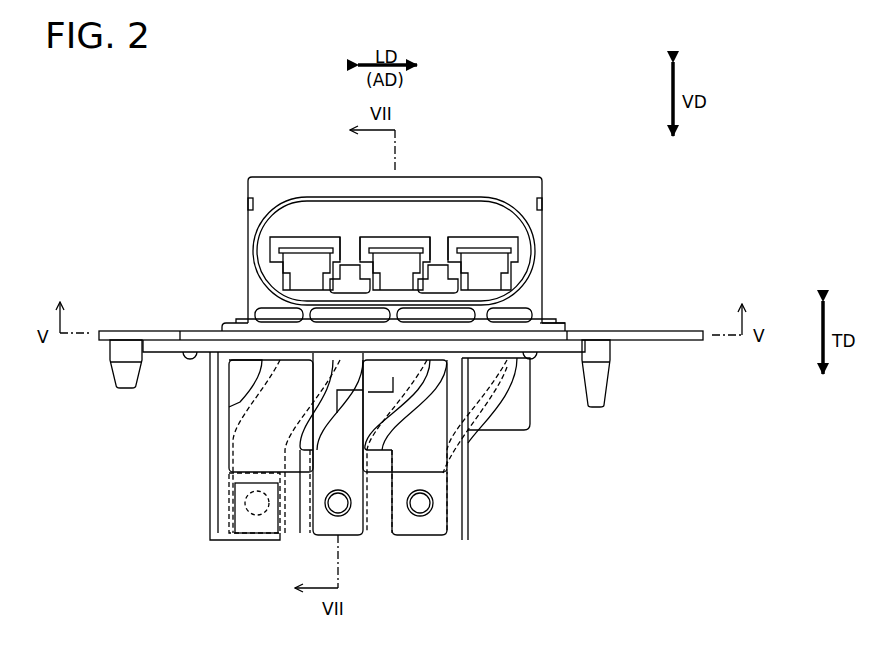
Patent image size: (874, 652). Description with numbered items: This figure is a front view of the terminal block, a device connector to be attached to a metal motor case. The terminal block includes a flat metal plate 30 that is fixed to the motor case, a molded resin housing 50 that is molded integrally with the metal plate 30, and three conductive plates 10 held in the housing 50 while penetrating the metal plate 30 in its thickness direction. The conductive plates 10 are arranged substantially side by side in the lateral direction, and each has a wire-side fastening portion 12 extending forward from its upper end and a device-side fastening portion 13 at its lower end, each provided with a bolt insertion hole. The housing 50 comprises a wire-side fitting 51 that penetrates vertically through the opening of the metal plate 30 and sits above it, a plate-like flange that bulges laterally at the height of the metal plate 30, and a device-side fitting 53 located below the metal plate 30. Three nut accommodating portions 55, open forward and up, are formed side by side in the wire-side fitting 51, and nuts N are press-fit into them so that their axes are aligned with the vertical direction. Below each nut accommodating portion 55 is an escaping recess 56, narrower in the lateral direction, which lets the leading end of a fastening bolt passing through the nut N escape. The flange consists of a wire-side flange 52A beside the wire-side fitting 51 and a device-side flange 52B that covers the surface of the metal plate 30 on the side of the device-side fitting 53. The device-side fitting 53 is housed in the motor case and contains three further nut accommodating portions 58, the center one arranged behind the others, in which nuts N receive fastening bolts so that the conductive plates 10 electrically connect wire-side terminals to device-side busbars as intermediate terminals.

The conductive plate 10 is at (291, 241).
The wire-side fastening portion 12 is at (494, 250).
The device-side fastening portion 13 is at (420, 525).
The nut N is at (393, 262).
The metal plate 30 is at (675, 329).
The housing 50 is at (549, 198).
The wire-side fitting 51 is at (246, 192).
The wire-side flange 52A is at (557, 322).
The device-side flange 52B is at (567, 347).
The device-side fitting 53 is at (474, 493).
The nut accommodating portion 55 is at (424, 258).
The escaping recess 56 is at (460, 285).
The nut accommodating portion 58 is at (318, 483).